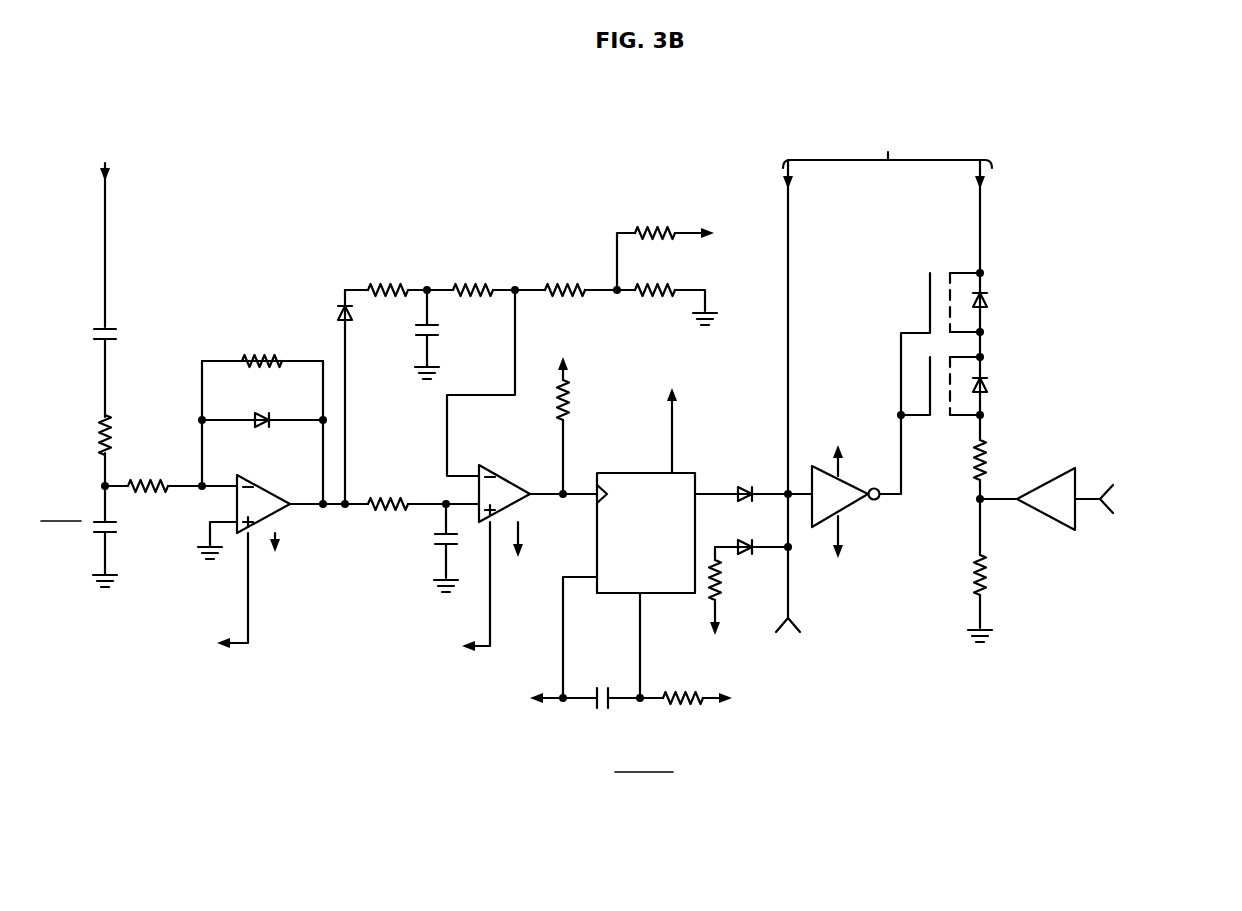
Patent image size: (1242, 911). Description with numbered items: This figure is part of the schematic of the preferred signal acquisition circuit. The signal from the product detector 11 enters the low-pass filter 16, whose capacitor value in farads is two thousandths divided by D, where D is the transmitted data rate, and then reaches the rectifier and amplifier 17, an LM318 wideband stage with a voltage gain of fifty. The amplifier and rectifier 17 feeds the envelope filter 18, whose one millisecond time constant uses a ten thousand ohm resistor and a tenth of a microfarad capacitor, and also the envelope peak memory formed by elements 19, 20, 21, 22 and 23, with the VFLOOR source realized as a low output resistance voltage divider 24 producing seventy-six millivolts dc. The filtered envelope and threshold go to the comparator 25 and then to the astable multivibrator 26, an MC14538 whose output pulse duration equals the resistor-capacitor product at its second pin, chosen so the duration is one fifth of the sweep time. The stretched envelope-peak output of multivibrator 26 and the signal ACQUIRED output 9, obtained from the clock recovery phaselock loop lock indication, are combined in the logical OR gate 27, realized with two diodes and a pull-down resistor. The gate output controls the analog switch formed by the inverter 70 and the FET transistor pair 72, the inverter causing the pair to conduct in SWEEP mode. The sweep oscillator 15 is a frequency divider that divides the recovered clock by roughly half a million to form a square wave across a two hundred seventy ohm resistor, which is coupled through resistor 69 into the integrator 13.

The signal ACQUIRED output 9 is at (803, 623).
The product detector 11 is at (107, 200).
The integrator 13 is at (887, 350).
The sweep oscillator 15 is at (1062, 563).
The low-pass filter 16 is at (78, 439).
The rectifier and amplifier 17 is at (187, 584).
The envelope filter 18 is at (348, 543).
The envelope peak memory diode 19 is at (361, 326).
The envelope peak memory resistor 20 is at (392, 308).
The envelope peak memory capacitor 21 is at (450, 332).
The envelope peak memory resistor 22 is at (480, 308).
The envelope peak memory resistor 23 is at (573, 302).
The VFLOOR voltage divider 24 is at (726, 286).
The comparator 25 is at (511, 430).
The astable multivibrator 26 is at (648, 580).
The logical OR gate 27 is at (760, 446).
The sweep resistor 69 is at (966, 450).
The inverter 70 is at (850, 483).
The FET transistor pair 72 is at (913, 318).